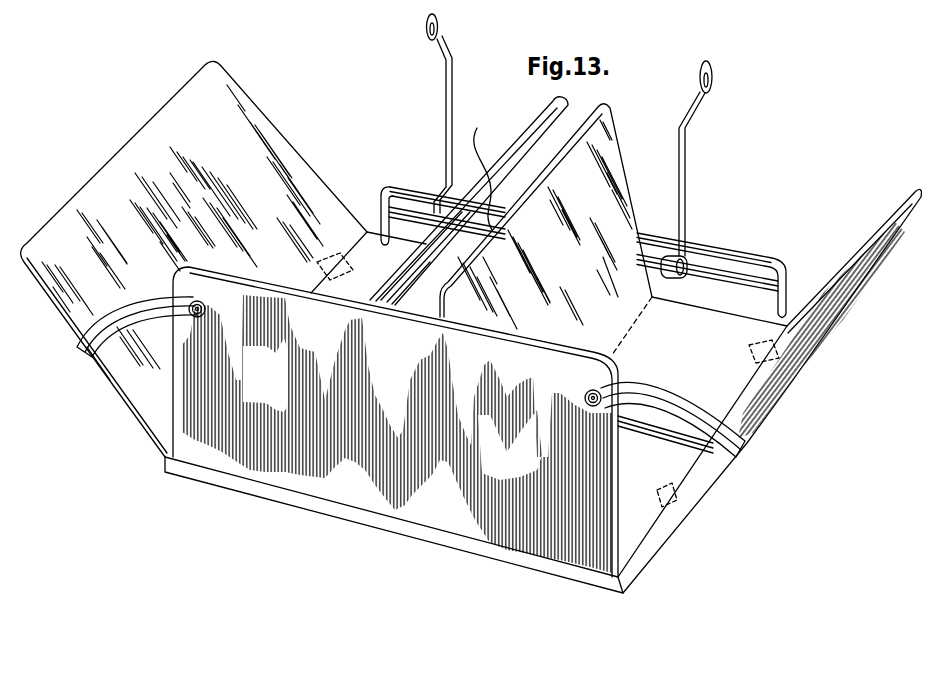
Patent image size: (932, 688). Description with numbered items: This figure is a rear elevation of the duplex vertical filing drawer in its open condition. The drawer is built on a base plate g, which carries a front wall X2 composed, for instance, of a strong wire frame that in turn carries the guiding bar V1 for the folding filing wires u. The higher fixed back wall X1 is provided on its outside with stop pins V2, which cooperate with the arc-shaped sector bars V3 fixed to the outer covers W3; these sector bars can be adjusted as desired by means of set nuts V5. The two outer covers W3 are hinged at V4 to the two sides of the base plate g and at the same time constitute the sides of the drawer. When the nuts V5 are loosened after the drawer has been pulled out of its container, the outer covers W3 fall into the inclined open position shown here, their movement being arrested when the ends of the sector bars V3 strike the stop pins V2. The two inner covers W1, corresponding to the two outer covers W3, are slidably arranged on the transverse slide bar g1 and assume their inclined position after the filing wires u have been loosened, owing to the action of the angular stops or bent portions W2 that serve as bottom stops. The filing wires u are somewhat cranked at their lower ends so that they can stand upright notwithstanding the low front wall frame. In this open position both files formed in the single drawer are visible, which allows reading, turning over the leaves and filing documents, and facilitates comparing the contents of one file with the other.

The fixed back wall X1 is at (177, 430).
The front wall X2 is at (708, 248).
The guiding bar V1 is at (734, 277).
The stop pins V2 is at (197, 318).
The arc-shaped sector bars V3 is at (90, 320).
The hinges V4 is at (333, 255).
The set nuts V5 is at (205, 306).
The inner covers W1 is at (590, 128).
The angular stops W2 is at (410, 252).
The outer covers W3 is at (240, 105).
The folding filing wires u is at (445, 115).
The base plate g is at (607, 585).
The transverse slide bar g1 is at (663, 433).